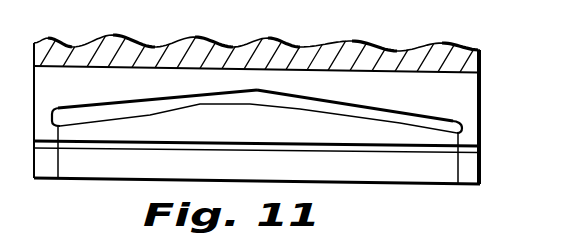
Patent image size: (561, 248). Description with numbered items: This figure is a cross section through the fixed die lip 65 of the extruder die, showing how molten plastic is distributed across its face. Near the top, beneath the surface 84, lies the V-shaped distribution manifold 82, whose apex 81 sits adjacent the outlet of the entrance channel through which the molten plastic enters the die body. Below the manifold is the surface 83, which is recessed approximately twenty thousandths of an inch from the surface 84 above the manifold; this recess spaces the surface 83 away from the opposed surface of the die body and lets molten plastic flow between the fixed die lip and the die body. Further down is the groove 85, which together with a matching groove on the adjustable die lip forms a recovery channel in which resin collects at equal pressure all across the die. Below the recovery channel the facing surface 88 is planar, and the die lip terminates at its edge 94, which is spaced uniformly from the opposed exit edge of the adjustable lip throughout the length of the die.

The fixed die lip 65 is at (482, 125).
The apex 81 is at (266, 94).
The V-shaped distribution manifold 82 is at (388, 112).
The surface 83 is at (258, 121).
The surface 84 is at (197, 76).
The groove 85 is at (447, 150).
The facing surface 88 is at (102, 164).
The edge 94 is at (358, 185).